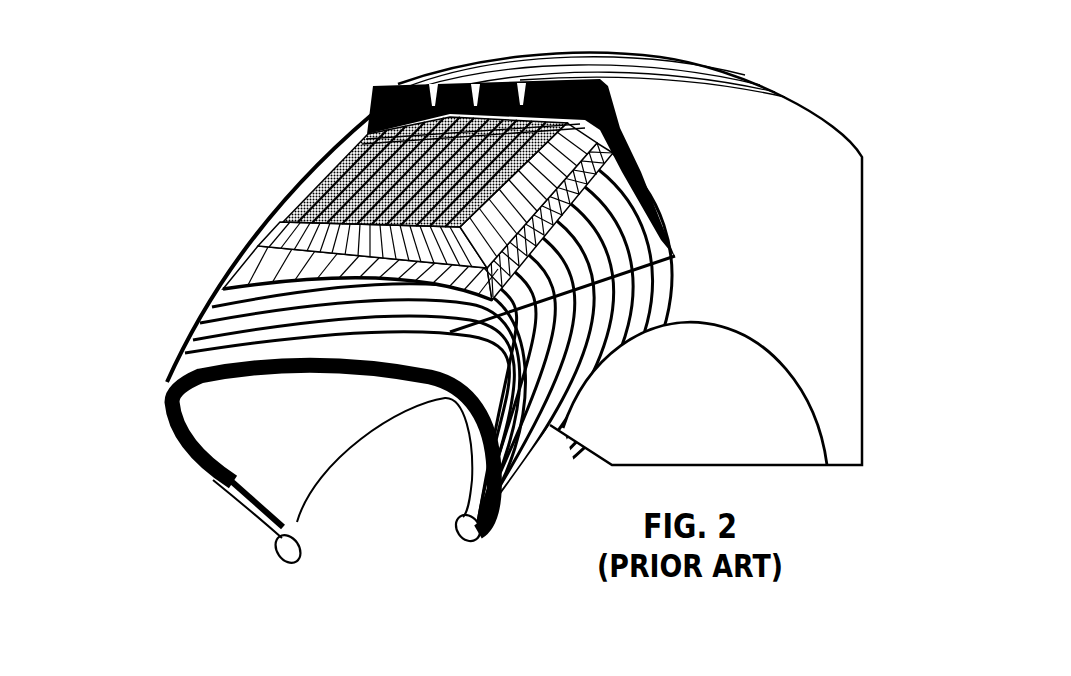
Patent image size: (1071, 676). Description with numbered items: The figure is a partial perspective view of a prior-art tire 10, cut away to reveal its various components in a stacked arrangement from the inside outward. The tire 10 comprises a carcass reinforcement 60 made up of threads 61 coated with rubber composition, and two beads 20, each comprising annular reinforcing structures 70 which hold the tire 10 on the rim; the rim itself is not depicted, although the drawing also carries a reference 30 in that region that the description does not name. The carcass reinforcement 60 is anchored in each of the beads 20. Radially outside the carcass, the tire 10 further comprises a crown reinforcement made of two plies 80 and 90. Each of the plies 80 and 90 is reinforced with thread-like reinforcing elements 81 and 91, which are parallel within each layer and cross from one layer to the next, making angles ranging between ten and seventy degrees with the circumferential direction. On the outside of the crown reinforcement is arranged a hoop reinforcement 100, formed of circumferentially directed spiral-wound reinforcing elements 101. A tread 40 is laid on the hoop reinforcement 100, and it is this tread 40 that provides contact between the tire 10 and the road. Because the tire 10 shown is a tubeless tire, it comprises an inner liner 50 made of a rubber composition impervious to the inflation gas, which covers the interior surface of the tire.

The tire 10 is at (812, 45).
The beads 20 is at (447, 493).
The rim 30 is at (712, 238).
The tread 40 is at (403, 80).
The inner liner 50 is at (294, 427).
The carcass reinforcement 60 is at (113, 258).
The threads 61 is at (217, 291).
The annular reinforcing structures 70 is at (452, 530).
The ply 80 is at (163, 252).
The thread-like reinforcing elements 81 is at (262, 232).
The ply 90 is at (172, 167).
The thread-like reinforcing elements 91 is at (310, 182).
The hoop reinforcement 100 is at (215, 80).
The spiral-wound reinforcing elements 101 is at (367, 138).